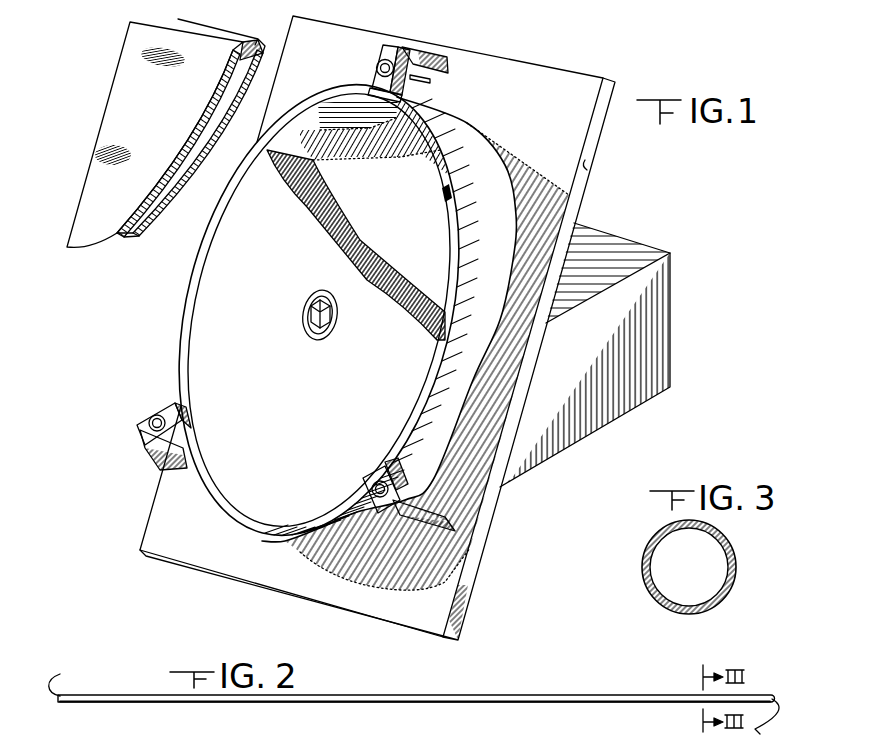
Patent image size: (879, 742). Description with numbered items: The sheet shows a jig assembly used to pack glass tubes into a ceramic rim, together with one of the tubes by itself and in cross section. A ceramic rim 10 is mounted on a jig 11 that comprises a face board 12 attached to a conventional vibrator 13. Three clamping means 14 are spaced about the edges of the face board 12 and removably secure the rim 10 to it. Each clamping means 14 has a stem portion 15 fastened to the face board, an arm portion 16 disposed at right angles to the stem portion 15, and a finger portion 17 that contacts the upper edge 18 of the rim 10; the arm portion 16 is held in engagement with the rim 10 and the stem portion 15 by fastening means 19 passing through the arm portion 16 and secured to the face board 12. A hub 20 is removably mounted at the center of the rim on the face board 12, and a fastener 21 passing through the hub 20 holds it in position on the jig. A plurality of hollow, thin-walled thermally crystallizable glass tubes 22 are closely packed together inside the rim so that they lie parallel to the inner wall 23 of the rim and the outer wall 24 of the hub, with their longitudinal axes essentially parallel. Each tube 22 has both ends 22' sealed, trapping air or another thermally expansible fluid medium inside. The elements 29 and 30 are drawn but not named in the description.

In FIG. 1, the ceramic rim 10 is at (470, 150).
In FIG. 1, the jig 11 is at (648, 206).
In FIG. 1, the face board 12 is at (560, 80).
In FIG. 1, the vibrator 13 is at (658, 370).
In FIG. 1, the clamping means 14 is at (385, 46).
In FIG. 1, the stem portion 15 is at (440, 58).
In FIG. 1, the arm portion 16 is at (381, 68).
In FIG. 1, the finger portion 17 is at (362, 86).
In FIG. 1, the upper edge 18 is at (423, 391).
In FIG. 1, the fastening means 19 is at (390, 48).
In FIG. 1, the hub 20 is at (334, 300).
In FIG. 1, the fastener 21 is at (311, 314).
In FIG. 1, the glass tube 22 is at (356, 245).
In FIG. 3, the glass tube 22 is at (689, 567).
In FIG. 2, the glass tube 22 is at (416, 684).
In FIG. 2, the sealed end 22' is at (417, 704).
In FIG. 1, the inner wall 23 is at (300, 132).
In FIG. 1, the outer wall 24 is at (338, 318).
In FIG. 1, the strip 29 is at (222, 32).
In FIG. 1, the deflector fin 30 is at (126, 29).